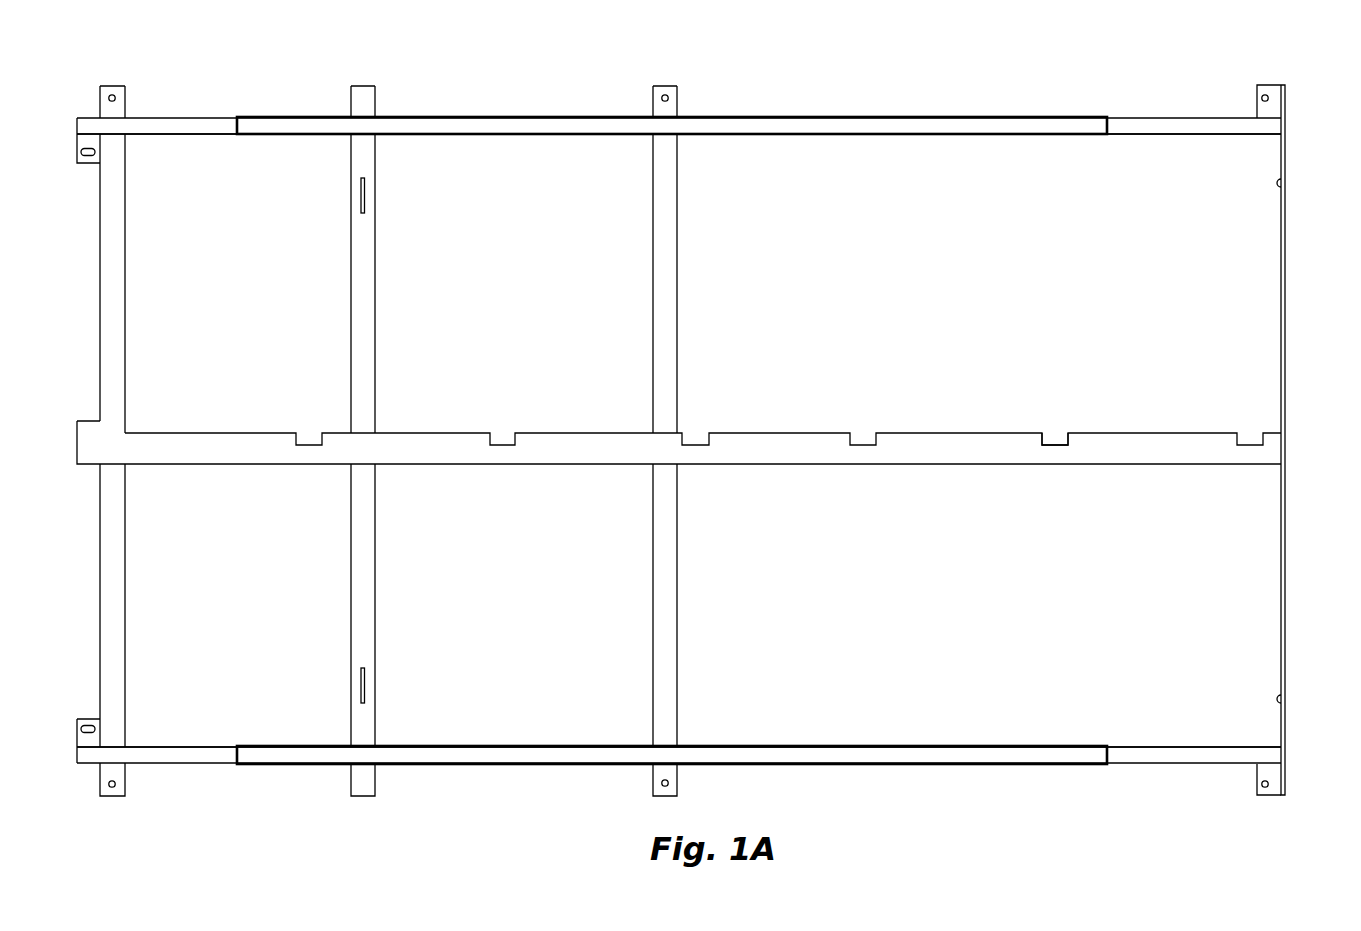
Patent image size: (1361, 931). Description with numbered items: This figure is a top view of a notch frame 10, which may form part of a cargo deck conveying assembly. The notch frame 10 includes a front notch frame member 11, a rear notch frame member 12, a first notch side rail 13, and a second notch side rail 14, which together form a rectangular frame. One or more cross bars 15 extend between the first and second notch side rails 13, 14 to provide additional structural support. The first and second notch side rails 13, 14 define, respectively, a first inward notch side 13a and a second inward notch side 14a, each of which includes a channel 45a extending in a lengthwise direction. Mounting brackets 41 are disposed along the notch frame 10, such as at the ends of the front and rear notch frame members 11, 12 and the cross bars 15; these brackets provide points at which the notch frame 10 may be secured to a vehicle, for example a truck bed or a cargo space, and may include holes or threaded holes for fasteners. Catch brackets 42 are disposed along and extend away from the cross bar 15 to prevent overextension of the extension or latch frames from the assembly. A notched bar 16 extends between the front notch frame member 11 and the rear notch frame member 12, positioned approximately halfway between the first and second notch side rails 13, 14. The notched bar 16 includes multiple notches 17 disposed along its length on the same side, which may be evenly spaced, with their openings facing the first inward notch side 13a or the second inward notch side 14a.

The notch frame 10 is at (1124, 72).
The front notch frame member 11 is at (1285, 233).
The rear notch frame member 12 is at (110, 287).
The first notch side rail 13 is at (679, 124).
The first inward notch side 13a is at (895, 133).
The second notch side rail 14 is at (679, 761).
The second inward notch side 14a is at (895, 747).
The cross bar 15 is at (416, 455).
The notched bar 16 is at (679, 428).
The notch 17 is at (1056, 446).
The mounting bracket 41 is at (1268, 97).
The catch bracket 42 is at (365, 188).
The channel 45a is at (515, 134).